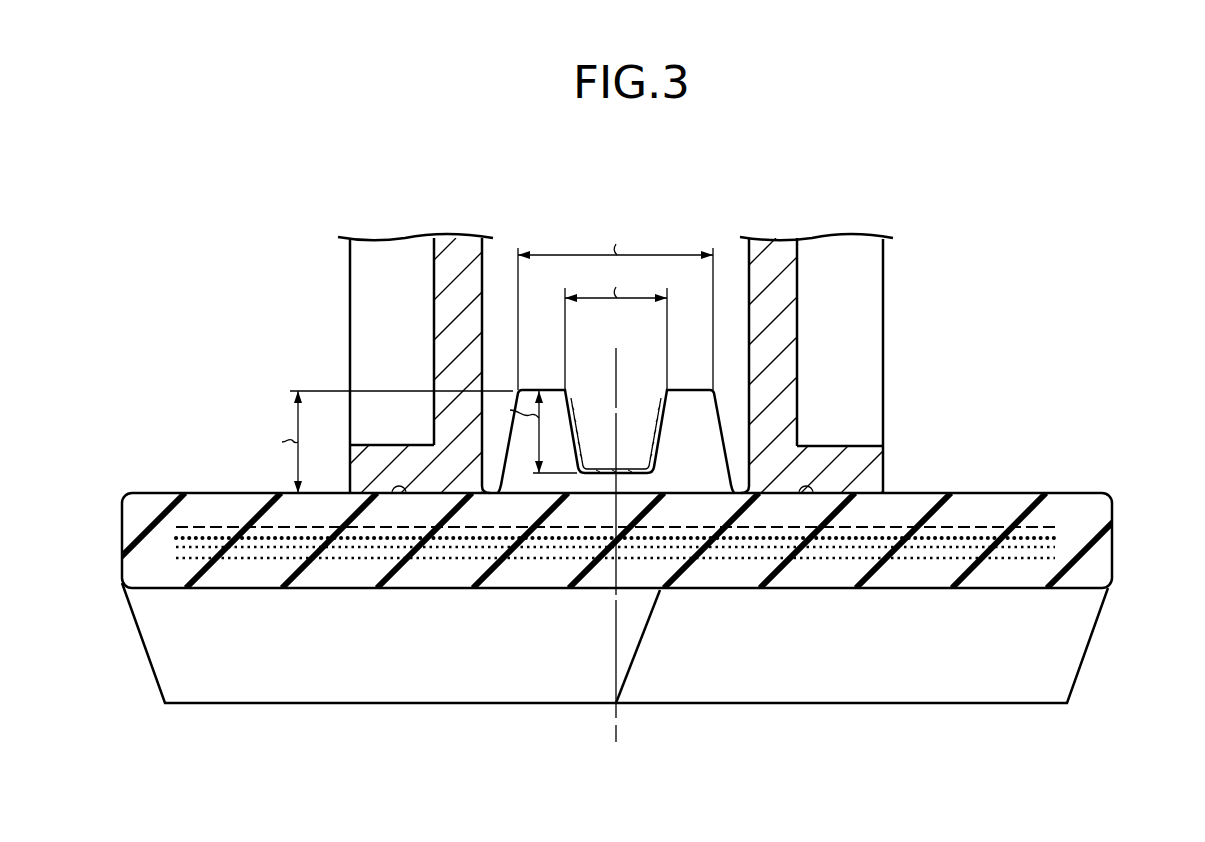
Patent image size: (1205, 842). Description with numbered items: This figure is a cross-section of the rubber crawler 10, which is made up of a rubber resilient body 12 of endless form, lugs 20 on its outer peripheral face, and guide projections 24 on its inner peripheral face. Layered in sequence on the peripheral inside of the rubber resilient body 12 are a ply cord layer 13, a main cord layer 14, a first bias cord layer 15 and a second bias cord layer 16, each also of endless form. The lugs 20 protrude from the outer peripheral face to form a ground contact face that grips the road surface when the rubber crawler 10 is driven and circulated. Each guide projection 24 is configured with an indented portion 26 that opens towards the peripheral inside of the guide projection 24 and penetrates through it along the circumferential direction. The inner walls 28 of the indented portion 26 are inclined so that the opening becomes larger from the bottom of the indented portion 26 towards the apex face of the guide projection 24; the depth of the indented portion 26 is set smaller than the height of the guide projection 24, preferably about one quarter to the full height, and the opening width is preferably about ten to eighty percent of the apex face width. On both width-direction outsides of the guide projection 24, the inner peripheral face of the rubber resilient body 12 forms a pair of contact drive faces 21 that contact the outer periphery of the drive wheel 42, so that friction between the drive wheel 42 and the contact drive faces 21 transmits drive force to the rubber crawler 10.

The rubber crawler 10 is at (995, 252).
The rubber resilient body 12 is at (1113, 495).
The ply cord layer 13 is at (1052, 557).
The main cord layer 14 is at (1055, 547).
The first bias cord layer 15 is at (1055, 538).
The second bias cord layer 16 is at (1052, 527).
The lug 20 is at (1087, 653).
The contact drive face 21 is at (404, 494).
The guide projection 24 is at (717, 392).
The indented portion 26 is at (610, 403).
The inner wall 28 is at (652, 400).
The drive wheel 42 is at (877, 457).